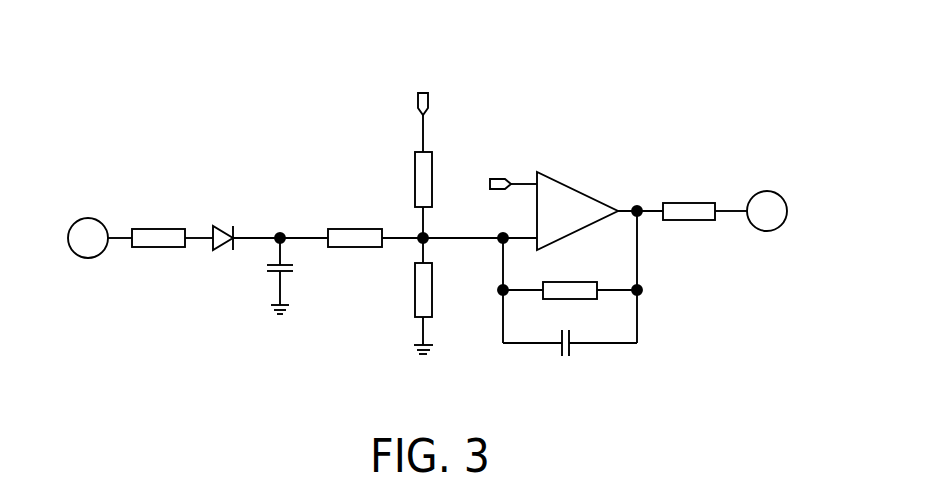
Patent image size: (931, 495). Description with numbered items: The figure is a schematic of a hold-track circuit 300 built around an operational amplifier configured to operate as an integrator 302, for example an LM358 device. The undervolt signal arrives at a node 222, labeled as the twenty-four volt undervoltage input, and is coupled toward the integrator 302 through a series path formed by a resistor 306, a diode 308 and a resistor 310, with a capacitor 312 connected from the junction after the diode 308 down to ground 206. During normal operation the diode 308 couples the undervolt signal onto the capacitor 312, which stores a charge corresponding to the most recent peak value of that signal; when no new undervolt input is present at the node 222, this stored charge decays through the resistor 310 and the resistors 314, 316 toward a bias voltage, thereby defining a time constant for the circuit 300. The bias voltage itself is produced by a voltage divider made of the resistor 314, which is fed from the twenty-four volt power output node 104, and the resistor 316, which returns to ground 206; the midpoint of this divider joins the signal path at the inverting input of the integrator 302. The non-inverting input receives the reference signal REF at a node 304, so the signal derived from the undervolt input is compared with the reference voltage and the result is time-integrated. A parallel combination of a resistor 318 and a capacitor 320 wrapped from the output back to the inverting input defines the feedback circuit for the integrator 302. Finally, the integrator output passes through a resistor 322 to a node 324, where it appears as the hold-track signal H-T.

The hold-track circuit 300 is at (593, 40).
The node 222 is at (87, 258).
The resistor 306 is at (177, 228).
The diode 308 is at (225, 225).
The resistor 310 is at (342, 228).
The capacitor 312 is at (288, 272).
The ground 206 is at (278, 318).
The power output node 104 is at (418, 100).
The resistor 314 is at (415, 162).
The resistor 316 is at (415, 302).
The node 304 is at (502, 178).
The integrator 302 is at (585, 221).
The resistor 318 is at (552, 282).
The capacitor 320 is at (572, 353).
The resistor 322 is at (700, 202).
The node 324 is at (767, 232).